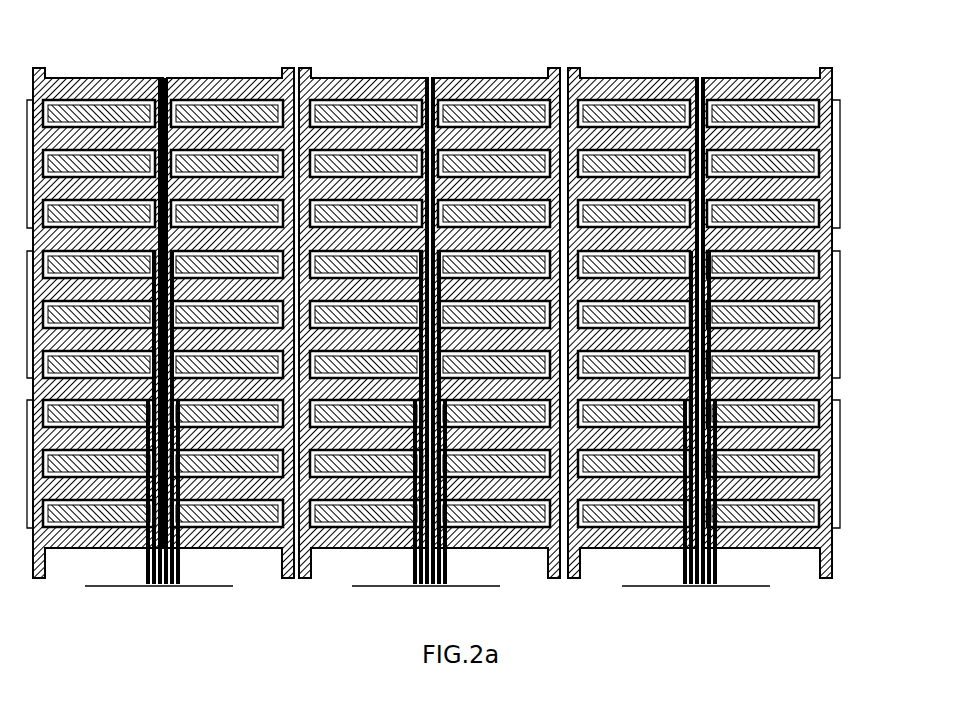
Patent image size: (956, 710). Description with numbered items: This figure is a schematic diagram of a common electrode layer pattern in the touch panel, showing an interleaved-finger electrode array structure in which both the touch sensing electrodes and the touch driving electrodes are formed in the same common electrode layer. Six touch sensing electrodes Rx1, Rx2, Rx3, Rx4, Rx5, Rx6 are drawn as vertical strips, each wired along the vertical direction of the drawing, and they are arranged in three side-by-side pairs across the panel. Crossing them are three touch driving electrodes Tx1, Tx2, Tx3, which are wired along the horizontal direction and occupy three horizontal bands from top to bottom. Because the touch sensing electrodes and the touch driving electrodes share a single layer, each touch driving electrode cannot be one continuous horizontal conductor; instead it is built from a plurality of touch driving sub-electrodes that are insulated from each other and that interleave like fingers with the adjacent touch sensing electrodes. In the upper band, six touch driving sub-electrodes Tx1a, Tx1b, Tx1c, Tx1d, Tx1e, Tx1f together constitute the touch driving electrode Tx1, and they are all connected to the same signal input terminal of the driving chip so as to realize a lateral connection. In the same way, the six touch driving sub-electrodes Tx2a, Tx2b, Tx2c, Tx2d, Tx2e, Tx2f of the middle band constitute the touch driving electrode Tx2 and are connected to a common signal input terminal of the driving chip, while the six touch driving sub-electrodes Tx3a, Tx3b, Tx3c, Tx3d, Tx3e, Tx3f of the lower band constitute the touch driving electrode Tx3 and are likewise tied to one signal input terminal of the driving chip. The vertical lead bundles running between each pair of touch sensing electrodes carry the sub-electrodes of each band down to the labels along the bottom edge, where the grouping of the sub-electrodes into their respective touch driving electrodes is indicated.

The touch sensing electrode Rx1 is at (138, 78).
The touch sensing electrode Rx2 is at (197, 78).
The touch sensing electrode Rx3 is at (412, 78).
The touch sensing electrode Rx4 is at (457, 78).
The touch sensing electrode Rx5 is at (682, 78).
The touch sensing electrode Rx6 is at (712, 78).
The touch driving electrode Tx1 is at (840, 160).
The touch driving electrode Tx2 is at (840, 318).
The touch driving electrode Tx3 is at (840, 465).
The touch driving sub-electrode Tx1a is at (85, 586).
The touch driving sub-electrode Tx2a is at (115, 586).
The touch driving sub-electrode Tx3a is at (145, 586).
The touch driving sub-electrode Tx3b is at (175, 586).
The touch driving sub-electrode Tx2b is at (205, 586).
The touch driving sub-electrode Tx1b is at (233, 586).
The touch driving sub-electrode Tx1c is at (352, 586).
The touch driving sub-electrode Tx2c is at (382, 586).
The touch driving sub-electrode Tx3c is at (412, 586).
The touch driving sub-electrode Tx3d is at (442, 586).
The touch driving sub-electrode Tx2d is at (472, 586).
The touch driving sub-electrode Tx1d is at (500, 586).
The touch driving sub-electrode Tx1e is at (622, 586).
The touch driving sub-electrode Tx2e is at (652, 586).
The touch driving sub-electrode Tx3e is at (682, 586).
The touch driving sub-electrode Tx3f is at (712, 586).
The touch driving sub-electrode Tx2f is at (742, 586).
The touch driving sub-electrode Tx1f is at (770, 586).